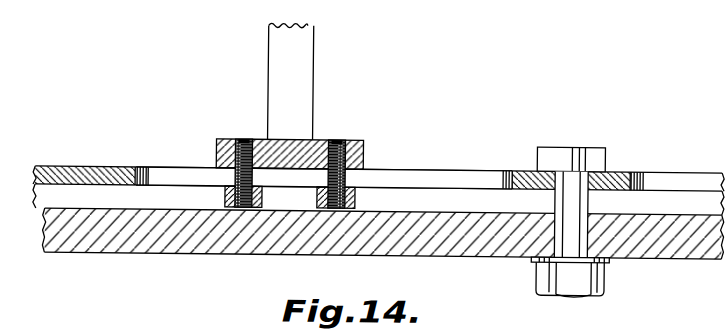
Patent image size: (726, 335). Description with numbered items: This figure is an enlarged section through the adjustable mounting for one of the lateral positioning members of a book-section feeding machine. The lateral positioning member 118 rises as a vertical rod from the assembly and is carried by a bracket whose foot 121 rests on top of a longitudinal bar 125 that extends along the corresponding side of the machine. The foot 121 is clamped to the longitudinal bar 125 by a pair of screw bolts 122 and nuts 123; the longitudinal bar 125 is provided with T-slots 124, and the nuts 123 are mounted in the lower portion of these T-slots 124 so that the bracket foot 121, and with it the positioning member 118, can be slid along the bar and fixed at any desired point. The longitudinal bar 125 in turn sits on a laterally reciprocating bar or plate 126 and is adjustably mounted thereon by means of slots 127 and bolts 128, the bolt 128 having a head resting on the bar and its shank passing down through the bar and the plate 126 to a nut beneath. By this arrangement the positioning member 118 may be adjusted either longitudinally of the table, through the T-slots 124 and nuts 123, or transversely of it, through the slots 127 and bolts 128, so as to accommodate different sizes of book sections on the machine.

The lateral positioning member 118 is at (292, 62).
The foot 121 is at (363, 136).
The screw bolt 122 is at (333, 138).
The nut 123 is at (225, 192).
The T-slot 124 is at (458, 189).
The longitudinal bar 125 is at (92, 152).
The laterally reciprocating bar or plate 126 is at (165, 237).
The slot 127 is at (588, 226).
The bolt 128 is at (583, 154).